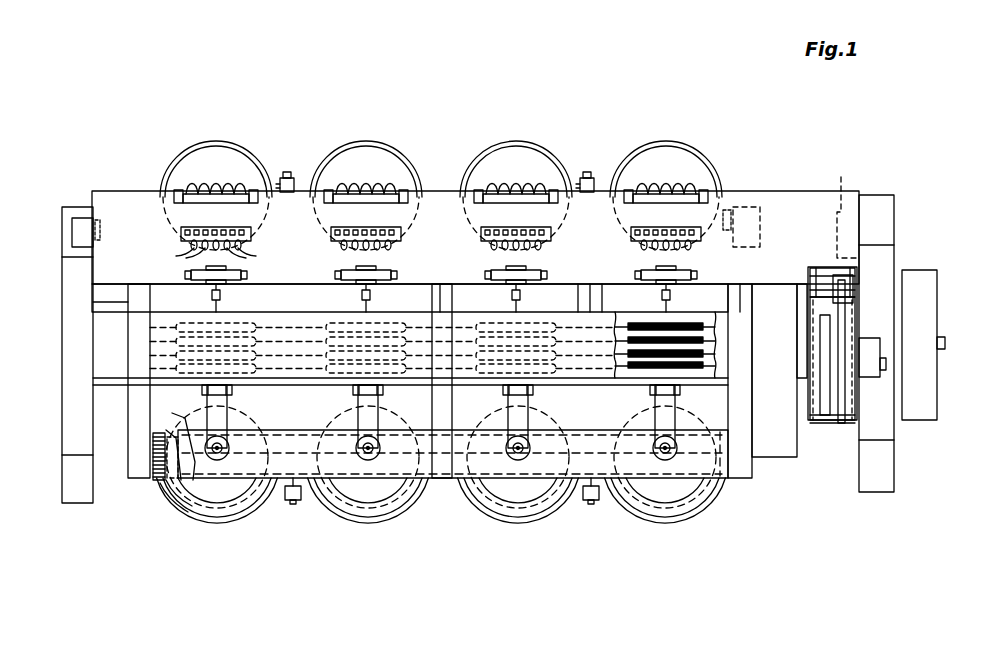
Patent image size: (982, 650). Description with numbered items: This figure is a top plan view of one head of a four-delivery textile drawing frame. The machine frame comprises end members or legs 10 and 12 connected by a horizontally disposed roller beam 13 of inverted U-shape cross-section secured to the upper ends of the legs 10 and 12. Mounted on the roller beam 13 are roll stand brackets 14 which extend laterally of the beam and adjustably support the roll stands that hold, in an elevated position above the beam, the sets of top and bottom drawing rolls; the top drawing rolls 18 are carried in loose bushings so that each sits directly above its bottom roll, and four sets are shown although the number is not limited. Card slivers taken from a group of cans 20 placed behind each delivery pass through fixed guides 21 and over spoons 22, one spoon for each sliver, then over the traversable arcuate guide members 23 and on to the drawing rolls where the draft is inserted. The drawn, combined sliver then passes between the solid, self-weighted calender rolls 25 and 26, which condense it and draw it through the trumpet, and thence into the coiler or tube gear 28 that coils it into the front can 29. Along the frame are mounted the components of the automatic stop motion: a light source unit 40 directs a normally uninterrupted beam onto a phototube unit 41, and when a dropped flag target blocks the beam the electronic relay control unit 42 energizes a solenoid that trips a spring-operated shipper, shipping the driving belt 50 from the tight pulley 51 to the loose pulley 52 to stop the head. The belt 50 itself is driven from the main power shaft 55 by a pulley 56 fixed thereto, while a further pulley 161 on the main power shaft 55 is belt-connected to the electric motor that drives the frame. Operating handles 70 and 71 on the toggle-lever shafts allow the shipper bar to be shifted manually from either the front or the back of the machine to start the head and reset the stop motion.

The frame end member 10 is at (75, 468).
The frame end member 12 is at (895, 462).
The roller beam 13 is at (109, 386).
The roll stand bracket 14 is at (301, 304).
The top drawing roll 18 is at (690, 352).
The can 20 is at (168, 180).
The fixed guide 21 is at (173, 201).
The spoon 22 is at (180, 252).
The traversable arcuate guide member 23 is at (248, 275).
The calender roll 25 is at (179, 438).
The calender roll 26 is at (174, 482).
The coiler 28 is at (206, 492).
The can 29 is at (245, 508).
The light source unit 40 is at (72, 222).
The phototube unit 41 is at (750, 207).
The electronic relay control unit 42 is at (840, 207).
The driving belt 50 is at (841, 440).
The tight pulley 51 is at (807, 417).
The loose pulley 52 is at (843, 425).
The main power shaft 55 is at (944, 343).
The pulley 56 is at (823, 426).
The operating handle 70 is at (283, 177).
The operating handle 71 is at (299, 504).
The pulley 161 is at (920, 270).